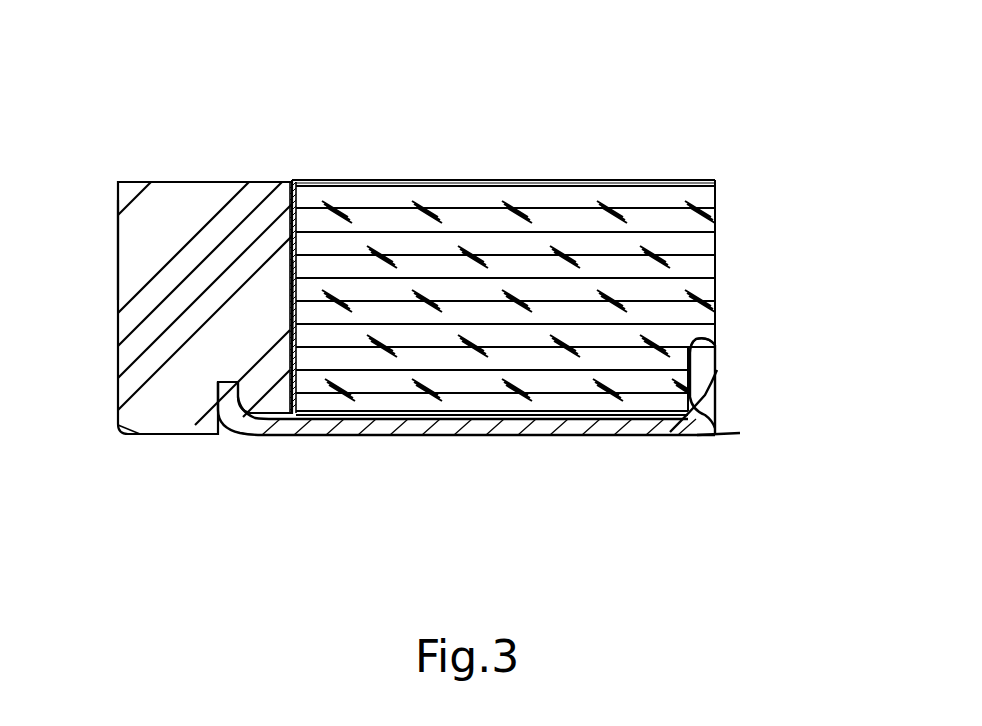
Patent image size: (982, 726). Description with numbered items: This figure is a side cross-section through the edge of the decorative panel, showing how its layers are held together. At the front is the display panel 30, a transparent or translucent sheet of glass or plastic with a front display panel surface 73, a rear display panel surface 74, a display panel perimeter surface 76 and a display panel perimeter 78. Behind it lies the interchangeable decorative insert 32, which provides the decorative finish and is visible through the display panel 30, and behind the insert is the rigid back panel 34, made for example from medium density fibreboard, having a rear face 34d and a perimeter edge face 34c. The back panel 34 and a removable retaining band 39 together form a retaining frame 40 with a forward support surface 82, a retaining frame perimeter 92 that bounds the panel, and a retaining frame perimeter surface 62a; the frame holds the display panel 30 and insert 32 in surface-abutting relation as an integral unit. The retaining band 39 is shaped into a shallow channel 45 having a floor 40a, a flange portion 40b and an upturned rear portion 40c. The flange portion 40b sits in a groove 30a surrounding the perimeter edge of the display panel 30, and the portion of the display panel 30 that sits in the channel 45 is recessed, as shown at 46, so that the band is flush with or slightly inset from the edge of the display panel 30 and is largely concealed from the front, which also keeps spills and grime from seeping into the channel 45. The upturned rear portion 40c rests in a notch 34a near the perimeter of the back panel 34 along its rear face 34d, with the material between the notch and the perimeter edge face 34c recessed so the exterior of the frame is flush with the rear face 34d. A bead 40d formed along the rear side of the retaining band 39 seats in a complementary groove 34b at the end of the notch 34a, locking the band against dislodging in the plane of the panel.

The display panel 30 is at (180, 200).
The groove 30a is at (228, 418).
The decorative insert 32 is at (293, 185).
The back panel 34 is at (620, 200).
The notch 34a is at (705, 408).
The groove 34b is at (698, 350).
The perimeter edge face 34c is at (540, 436).
The rear face 34d is at (717, 227).
The retaining band 39 is at (455, 431).
The retaining frame 40 is at (699, 436).
The floor 40a is at (577, 436).
The flange portion 40b is at (237, 408).
The upturned rear portion 40c is at (712, 390).
The bead 40d is at (718, 342).
The channel 45 is at (270, 423).
The recess 46 is at (263, 430).
The retaining frame perimeter surface 62a is at (417, 432).
The front display panel surface 73 is at (118, 242).
The rear display panel surface 74 is at (290, 258).
The display panel perimeter surface 76 is at (203, 437).
The display panel perimeter 78 is at (127, 437).
The forward support surface 82 is at (294, 300).
The retaining frame perimeter 92 is at (660, 435).